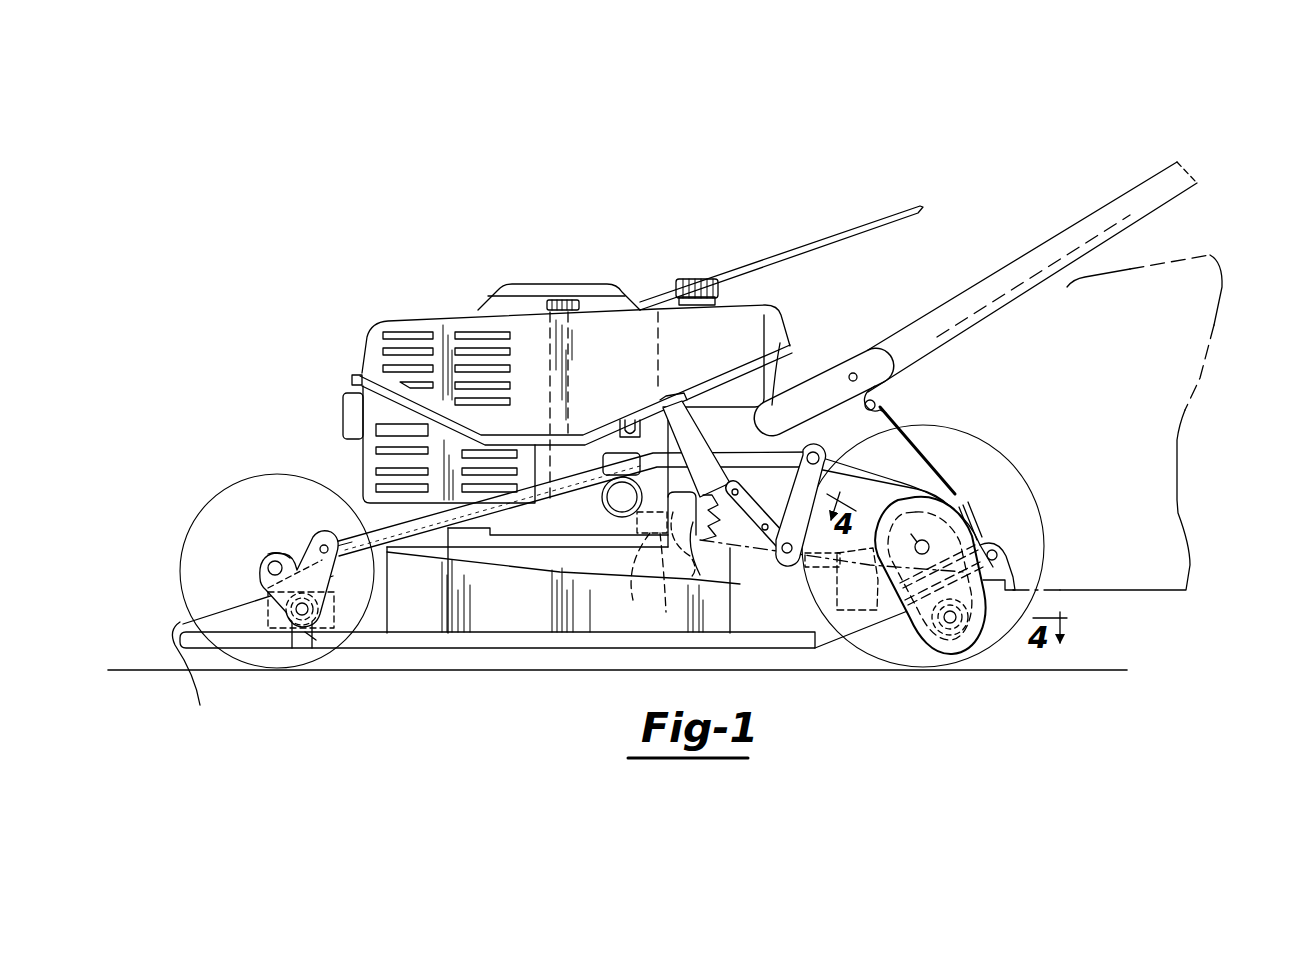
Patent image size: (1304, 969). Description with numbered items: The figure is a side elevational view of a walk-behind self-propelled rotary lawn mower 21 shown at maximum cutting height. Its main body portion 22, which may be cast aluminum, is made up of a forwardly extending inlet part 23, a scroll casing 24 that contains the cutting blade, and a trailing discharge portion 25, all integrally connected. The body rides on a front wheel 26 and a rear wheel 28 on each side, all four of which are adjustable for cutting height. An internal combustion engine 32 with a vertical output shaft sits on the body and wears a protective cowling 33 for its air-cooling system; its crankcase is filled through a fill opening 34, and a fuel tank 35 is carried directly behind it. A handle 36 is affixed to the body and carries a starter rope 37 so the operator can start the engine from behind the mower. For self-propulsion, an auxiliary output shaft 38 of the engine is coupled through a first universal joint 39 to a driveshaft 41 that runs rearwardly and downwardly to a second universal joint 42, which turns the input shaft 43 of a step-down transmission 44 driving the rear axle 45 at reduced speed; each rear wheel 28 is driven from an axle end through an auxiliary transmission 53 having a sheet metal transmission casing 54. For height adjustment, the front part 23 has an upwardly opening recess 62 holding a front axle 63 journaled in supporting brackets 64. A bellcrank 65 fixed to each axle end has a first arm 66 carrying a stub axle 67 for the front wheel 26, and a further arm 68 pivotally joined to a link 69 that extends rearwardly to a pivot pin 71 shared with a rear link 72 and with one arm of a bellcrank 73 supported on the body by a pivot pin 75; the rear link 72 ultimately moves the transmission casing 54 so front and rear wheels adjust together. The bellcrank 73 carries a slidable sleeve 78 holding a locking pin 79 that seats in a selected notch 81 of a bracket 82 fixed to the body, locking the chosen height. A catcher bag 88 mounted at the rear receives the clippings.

The lawn mower 21 is at (1012, 184).
The main body portion 22 is at (490, 624).
The inlet part 23 is at (185, 676).
The scroll casing 24 is at (592, 618).
The discharge portion 25 is at (925, 465).
The front wheel 26 is at (268, 468).
The rear wheel 28 is at (1042, 520).
The internal combustion engine 32 is at (414, 316).
The protective cowling 33 is at (376, 352).
The fill opening 34 is at (560, 298).
The fuel tank 35 is at (722, 297).
The handle 36 is at (1143, 186).
The starter rope 37 is at (857, 226).
The auxiliary output shaft 38 is at (648, 564).
The first universal joint 39 is at (668, 585).
The driveshaft 41 is at (836, 575).
The second universal joint 42 is at (832, 579).
The input shaft 43 is at (930, 575).
The step-down transmission 44 is at (1012, 549).
The rear axle 45 is at (946, 625).
The auxiliary transmission 53 is at (963, 507).
The transmission casing 54 is at (990, 522).
The recess 62 is at (343, 614).
The front axle 63 is at (297, 620).
The supporting bracket 64 is at (262, 590).
The bellcrank 65 is at (279, 552).
The first arm 66 is at (260, 582).
The stub axle 67 is at (270, 565).
The further arm 68 is at (350, 572).
The link 69 is at (488, 517).
The pivot pin 71 is at (888, 410).
The rear link 72 is at (866, 472).
The bellcrank 73 is at (800, 400).
The pivot pin 75 is at (787, 565).
The slidable sleeve 78 is at (777, 344).
The locking pin 79 is at (679, 455).
The notch 81 is at (708, 548).
The bracket 82 is at (745, 560).
The catcher bag 88 is at (1206, 256).